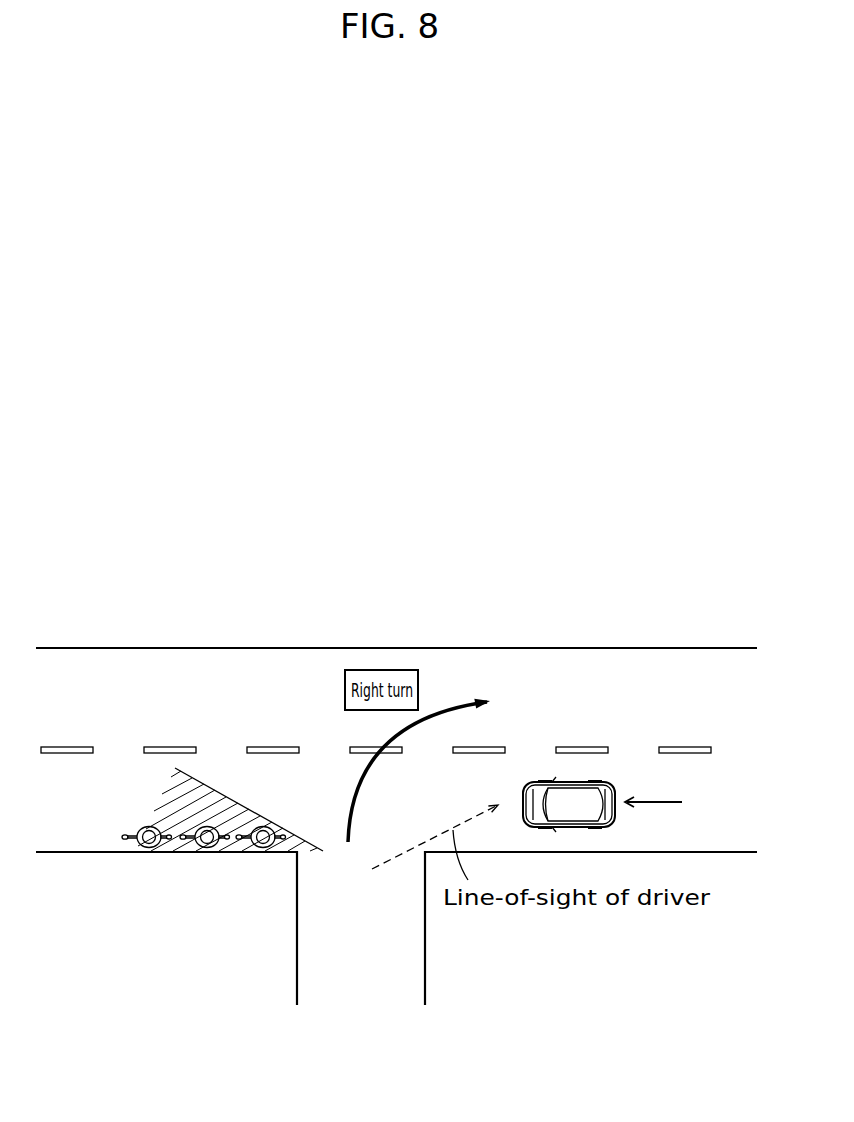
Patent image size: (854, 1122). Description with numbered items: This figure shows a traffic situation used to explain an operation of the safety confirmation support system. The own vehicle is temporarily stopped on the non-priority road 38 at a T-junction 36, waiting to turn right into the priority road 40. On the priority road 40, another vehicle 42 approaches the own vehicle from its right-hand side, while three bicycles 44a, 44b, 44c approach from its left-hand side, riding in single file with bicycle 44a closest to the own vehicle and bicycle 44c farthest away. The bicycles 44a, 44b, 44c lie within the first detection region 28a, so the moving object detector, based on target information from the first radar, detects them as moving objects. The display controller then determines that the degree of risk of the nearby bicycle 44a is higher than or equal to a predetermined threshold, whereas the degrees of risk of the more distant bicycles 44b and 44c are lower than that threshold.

The first detection region 28a is at (220, 805).
The T-junction 36 is at (302, 675).
The non-priority road 38 is at (408, 955).
The priority road 40 is at (583, 668).
The another vehicle 42 is at (612, 787).
The bicycle 44a is at (452, 834).
The bicycle 44b is at (203, 848).
The bicycle 44c is at (145, 848).